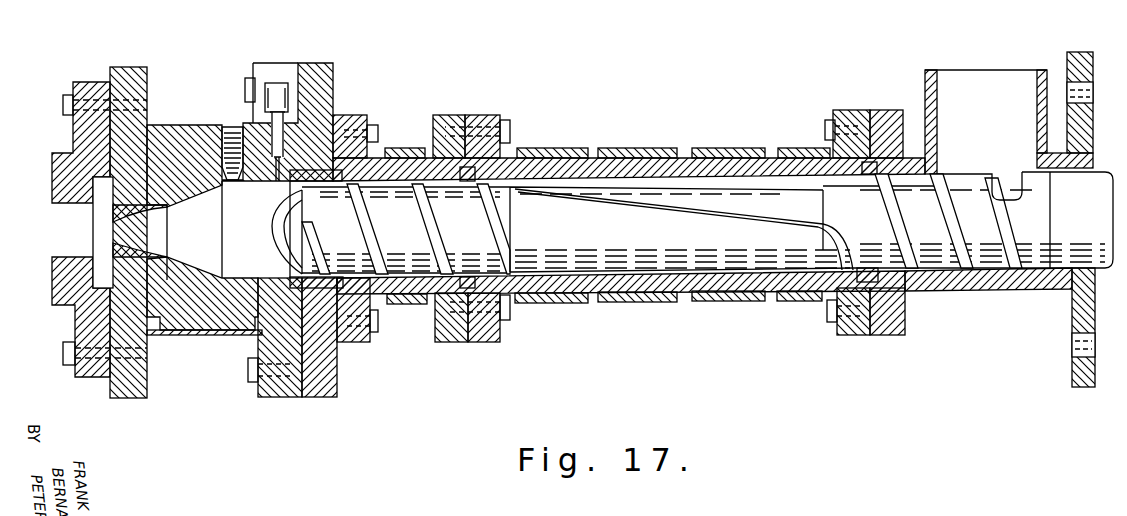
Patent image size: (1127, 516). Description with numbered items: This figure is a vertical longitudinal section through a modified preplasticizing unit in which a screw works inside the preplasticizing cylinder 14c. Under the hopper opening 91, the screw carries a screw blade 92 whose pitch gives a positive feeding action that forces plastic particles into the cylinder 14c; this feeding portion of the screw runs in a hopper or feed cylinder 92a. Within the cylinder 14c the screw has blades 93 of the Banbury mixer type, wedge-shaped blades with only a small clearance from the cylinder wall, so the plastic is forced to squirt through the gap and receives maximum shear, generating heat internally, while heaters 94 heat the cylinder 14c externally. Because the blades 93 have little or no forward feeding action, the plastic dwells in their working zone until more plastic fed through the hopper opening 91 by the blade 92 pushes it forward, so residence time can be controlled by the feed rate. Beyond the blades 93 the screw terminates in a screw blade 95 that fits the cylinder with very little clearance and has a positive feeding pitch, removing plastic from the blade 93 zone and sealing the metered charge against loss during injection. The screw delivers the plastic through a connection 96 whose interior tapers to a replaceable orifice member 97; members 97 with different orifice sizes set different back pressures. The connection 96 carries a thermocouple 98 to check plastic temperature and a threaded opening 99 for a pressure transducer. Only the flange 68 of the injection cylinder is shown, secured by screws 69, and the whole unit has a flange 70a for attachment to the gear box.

The preplasticizing cylinder 14c is at (668, 158).
The flange 68 is at (85, 378).
The screws 69 is at (63, 352).
The flange 70a is at (1072, 323).
The hopper opening 91 is at (945, 88).
The screw blade 92 is at (960, 273).
The hopper or feed cylinder 92a is at (1000, 288).
The blades 93 is at (700, 204).
The heaters 94 is at (396, 150).
The screw blade 95 is at (364, 201).
The connection 96 is at (185, 135).
The orifice member 97 is at (140, 205).
The thermocouple 98 is at (277, 85).
The threaded opening 99 is at (233, 127).